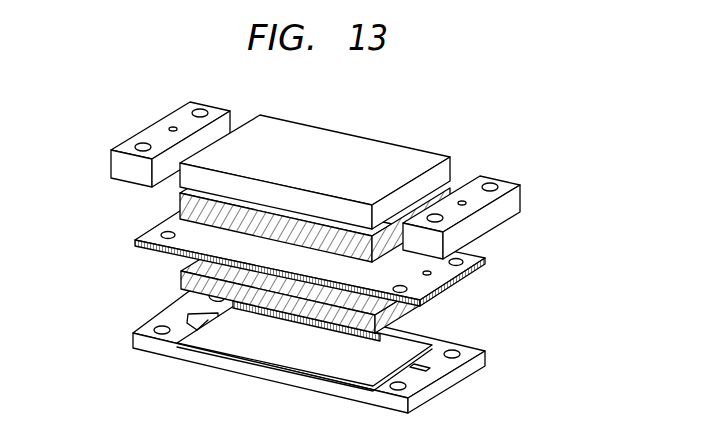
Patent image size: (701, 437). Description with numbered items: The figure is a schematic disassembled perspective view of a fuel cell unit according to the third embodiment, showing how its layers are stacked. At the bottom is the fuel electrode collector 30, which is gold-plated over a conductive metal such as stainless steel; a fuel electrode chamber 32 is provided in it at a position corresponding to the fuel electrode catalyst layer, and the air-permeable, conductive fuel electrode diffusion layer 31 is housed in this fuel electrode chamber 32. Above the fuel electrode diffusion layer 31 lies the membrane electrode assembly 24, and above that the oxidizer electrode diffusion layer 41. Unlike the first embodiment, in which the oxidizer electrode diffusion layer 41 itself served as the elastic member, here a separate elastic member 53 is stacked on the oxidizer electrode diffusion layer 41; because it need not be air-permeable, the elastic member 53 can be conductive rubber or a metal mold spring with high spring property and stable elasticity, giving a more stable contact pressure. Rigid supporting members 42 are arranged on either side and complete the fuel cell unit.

The membrane electrode assembly 24 is at (485, 261).
The fuel electrode collector 30 is at (453, 374).
The fuel electrode diffusion layer 31 is at (403, 309).
The fuel electrode chamber 32 is at (287, 357).
The oxidizer electrode diffusion layer 41 is at (178, 204).
The rigid supporting members 42 is at (152, 135).
The elastic member 53 is at (357, 152).